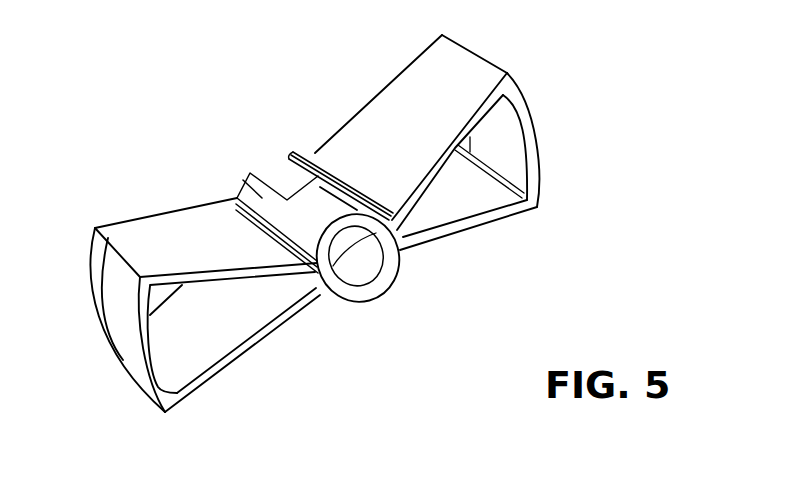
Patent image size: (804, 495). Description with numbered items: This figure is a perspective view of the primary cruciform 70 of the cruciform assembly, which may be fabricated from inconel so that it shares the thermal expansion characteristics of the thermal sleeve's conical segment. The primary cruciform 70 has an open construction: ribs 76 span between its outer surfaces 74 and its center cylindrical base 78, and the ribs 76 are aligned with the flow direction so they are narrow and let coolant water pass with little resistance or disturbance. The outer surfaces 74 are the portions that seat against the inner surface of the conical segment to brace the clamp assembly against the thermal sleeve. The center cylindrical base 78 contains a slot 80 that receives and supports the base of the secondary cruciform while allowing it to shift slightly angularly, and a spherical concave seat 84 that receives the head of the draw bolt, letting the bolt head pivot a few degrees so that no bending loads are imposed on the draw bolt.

The primary cruciform 70 is at (277, 348).
The outer surfaces 74 is at (127, 335).
The ribs 76 is at (150, 240).
The center cylindrical base 78 is at (243, 182).
The slot 80 is at (285, 175).
The spherical concave seat 84 is at (378, 273).